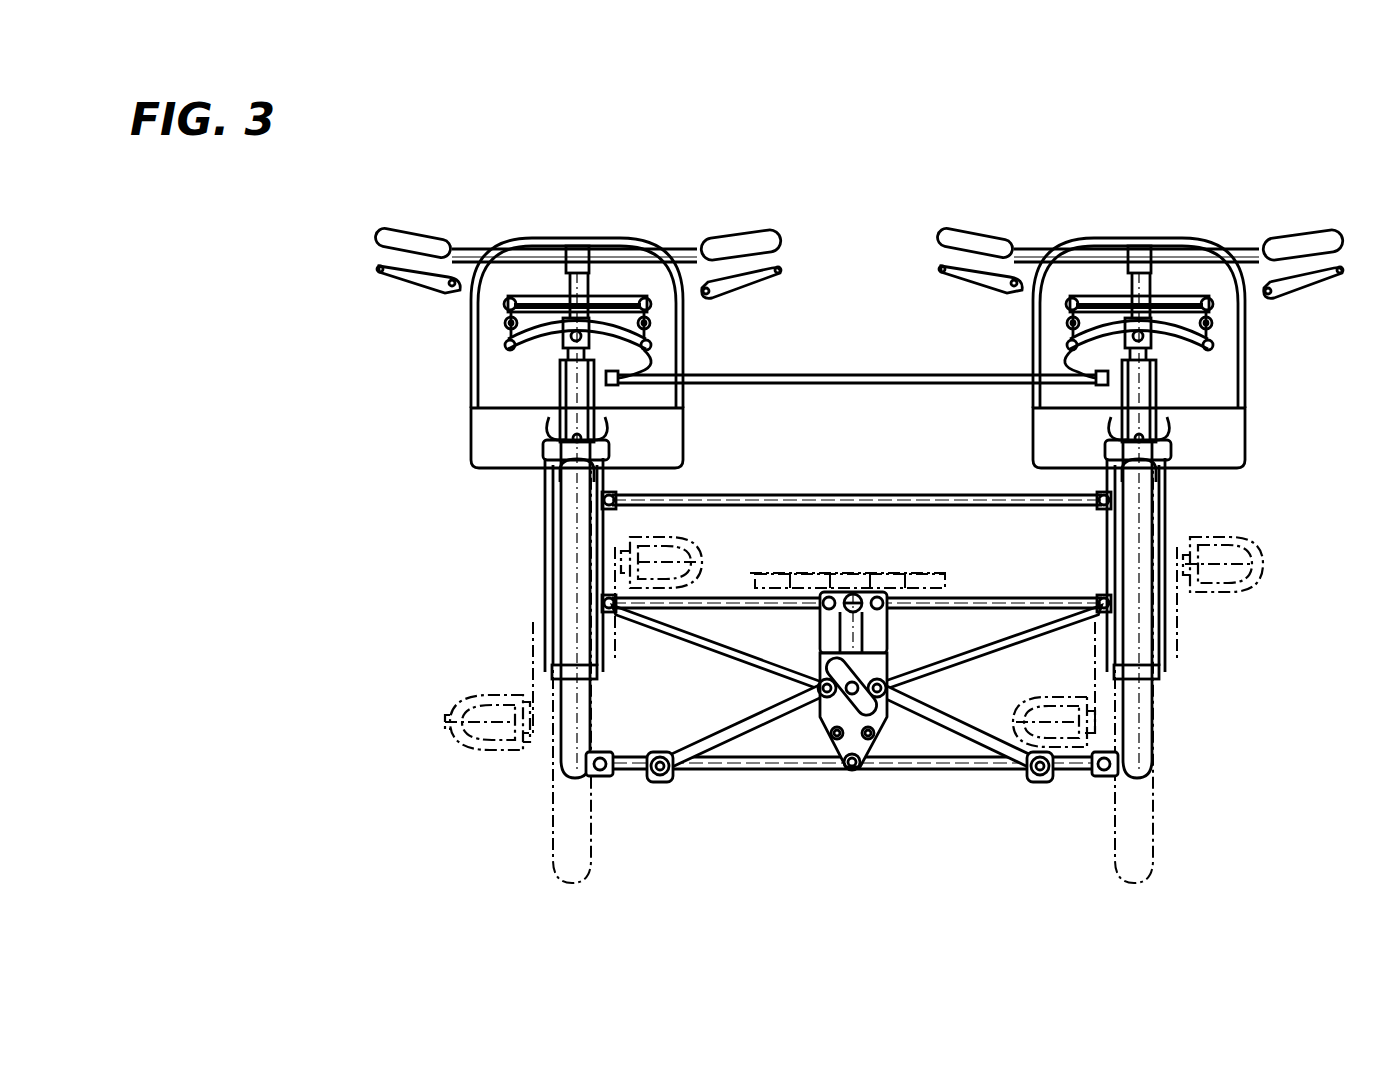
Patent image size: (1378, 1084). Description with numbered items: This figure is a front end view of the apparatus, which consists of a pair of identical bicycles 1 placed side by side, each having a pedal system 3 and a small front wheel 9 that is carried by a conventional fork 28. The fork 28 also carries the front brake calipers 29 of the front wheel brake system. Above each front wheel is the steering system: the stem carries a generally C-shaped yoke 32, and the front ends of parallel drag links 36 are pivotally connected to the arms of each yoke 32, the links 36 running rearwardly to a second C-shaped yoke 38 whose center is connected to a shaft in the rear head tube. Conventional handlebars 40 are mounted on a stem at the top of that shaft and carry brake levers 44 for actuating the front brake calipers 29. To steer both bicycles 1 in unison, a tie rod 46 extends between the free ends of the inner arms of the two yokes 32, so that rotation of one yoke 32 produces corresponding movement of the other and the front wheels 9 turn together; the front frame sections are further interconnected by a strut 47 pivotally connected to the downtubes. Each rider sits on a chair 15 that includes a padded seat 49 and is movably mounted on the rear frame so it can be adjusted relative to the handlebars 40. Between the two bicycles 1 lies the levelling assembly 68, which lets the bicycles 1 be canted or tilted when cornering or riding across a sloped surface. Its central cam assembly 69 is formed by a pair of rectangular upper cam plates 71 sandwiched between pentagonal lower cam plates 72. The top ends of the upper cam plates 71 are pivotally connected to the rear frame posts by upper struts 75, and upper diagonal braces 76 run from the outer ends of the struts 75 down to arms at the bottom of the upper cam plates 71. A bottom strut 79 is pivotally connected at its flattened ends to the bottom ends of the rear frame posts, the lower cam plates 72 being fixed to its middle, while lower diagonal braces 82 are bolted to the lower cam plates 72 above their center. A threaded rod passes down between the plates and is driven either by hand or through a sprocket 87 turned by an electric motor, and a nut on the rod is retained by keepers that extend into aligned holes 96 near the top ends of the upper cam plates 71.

The bicycle 1 is at (492, 826).
The pedal system 3 is at (450, 700).
The front wheel 9 is at (586, 873).
The chair 15 is at (577, 245).
The fork 28 is at (545, 540).
The front brake calipers 29 is at (545, 470).
The C-shaped yoke 32 is at (533, 338).
The drag link 36 is at (505, 323).
The second C-shaped yoke 38 is at (540, 296).
The handlebars 40 is at (658, 248).
The brake levers 44 is at (379, 271).
The tie rod 46 is at (866, 374).
The strut 47 is at (885, 495).
The padded seat 49 is at (678, 438).
The levelling assembly 68 is at (797, 830).
The central cam assembly 69 is at (860, 770).
The upper cam plates 71 is at (822, 630).
The lower cam plates 72 is at (838, 770).
The upper struts 75 is at (725, 598).
The upper diagonal braces 76 is at (725, 645).
The bottom strut 79 is at (965, 770).
The lower diagonal braces 82 is at (715, 748).
The sprocket 87 is at (795, 574).
The holes 96 is at (870, 573).